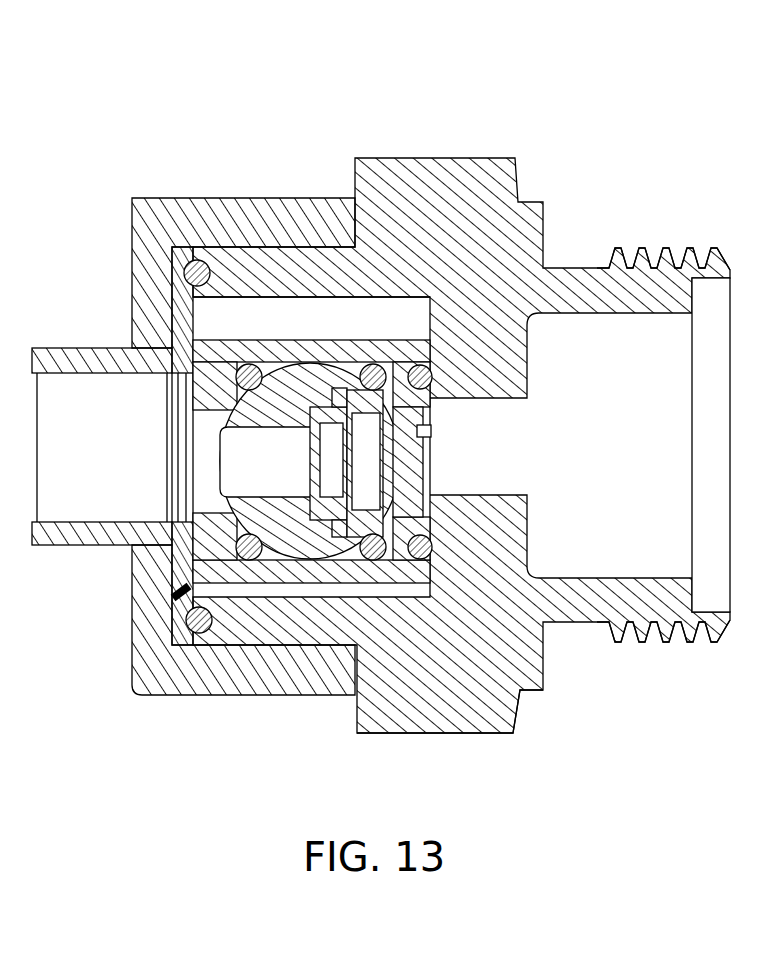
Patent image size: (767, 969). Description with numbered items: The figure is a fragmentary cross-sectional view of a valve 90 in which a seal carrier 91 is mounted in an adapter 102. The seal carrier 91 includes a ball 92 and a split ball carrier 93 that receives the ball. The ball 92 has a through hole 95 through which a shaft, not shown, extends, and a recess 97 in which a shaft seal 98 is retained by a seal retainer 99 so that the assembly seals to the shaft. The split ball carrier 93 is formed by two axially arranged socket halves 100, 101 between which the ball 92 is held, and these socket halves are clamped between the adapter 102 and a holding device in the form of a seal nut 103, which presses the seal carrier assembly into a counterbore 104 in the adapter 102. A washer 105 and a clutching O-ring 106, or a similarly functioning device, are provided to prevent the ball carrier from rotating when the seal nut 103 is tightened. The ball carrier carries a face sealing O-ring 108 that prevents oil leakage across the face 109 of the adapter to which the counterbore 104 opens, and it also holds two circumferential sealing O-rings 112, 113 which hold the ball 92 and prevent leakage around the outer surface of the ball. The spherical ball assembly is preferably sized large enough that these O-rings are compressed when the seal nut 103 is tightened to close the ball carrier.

The valve 90 is at (652, 170).
The seal carrier 91 is at (276, 325).
The ball 92 is at (295, 560).
The split ball carrier 93 is at (183, 592).
The through hole 95 is at (252, 503).
The recess 97 is at (333, 505).
The shaft seal 98 is at (333, 503).
The seal retainer 99 is at (388, 500).
The socket half 100 is at (217, 347).
The socket half 101 is at (402, 335).
The adapter 102 is at (500, 733).
The seal nut 103 is at (152, 700).
The counterbore 104 is at (373, 305).
The washer 105 is at (168, 267).
The clutching O-ring 106 is at (205, 268).
The face sealing O-ring 108 is at (433, 550).
The face 109 is at (425, 423).
The circumferential sealing O-ring 112 is at (237, 368).
The circumferential sealing O-ring 113 is at (383, 522).